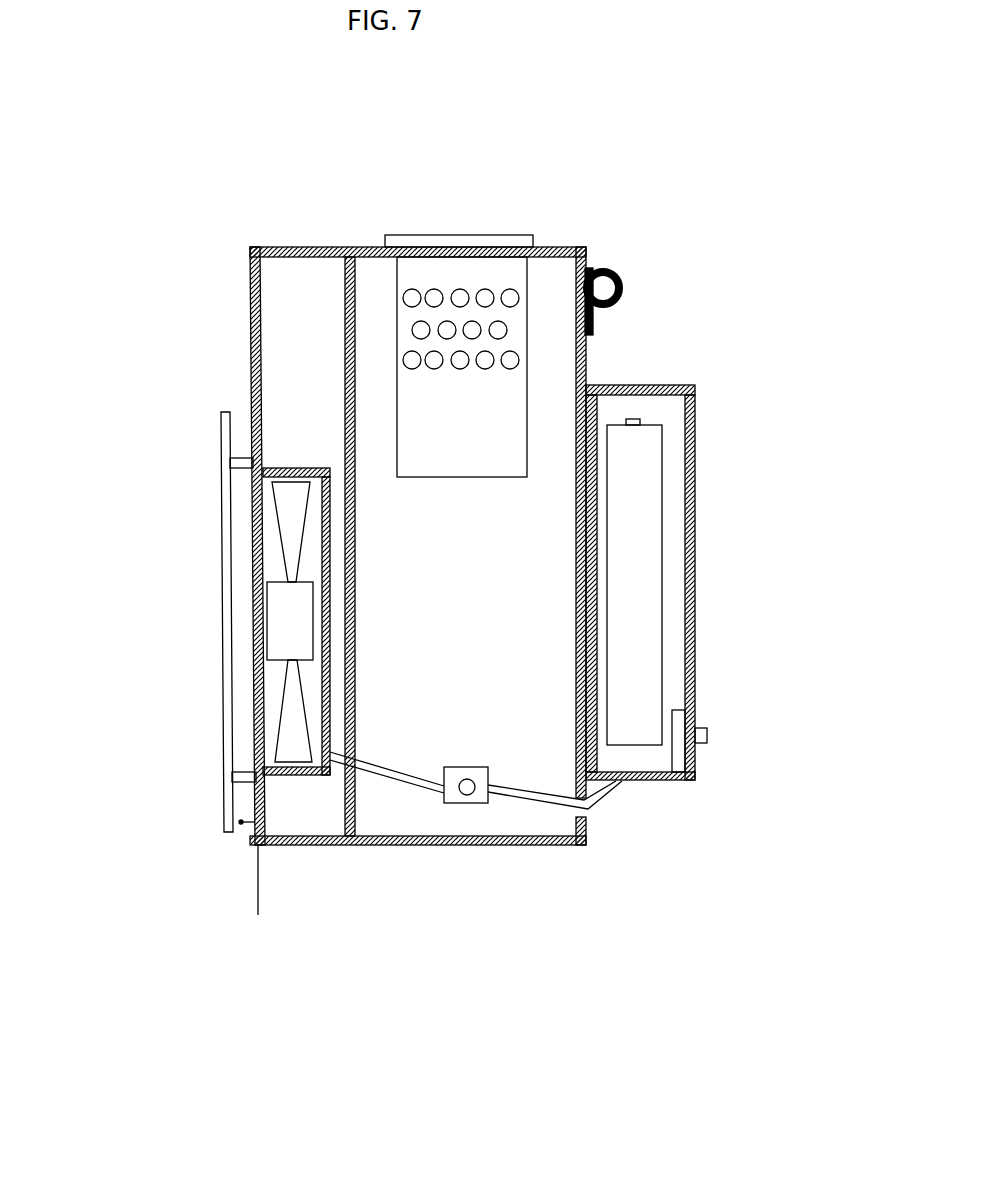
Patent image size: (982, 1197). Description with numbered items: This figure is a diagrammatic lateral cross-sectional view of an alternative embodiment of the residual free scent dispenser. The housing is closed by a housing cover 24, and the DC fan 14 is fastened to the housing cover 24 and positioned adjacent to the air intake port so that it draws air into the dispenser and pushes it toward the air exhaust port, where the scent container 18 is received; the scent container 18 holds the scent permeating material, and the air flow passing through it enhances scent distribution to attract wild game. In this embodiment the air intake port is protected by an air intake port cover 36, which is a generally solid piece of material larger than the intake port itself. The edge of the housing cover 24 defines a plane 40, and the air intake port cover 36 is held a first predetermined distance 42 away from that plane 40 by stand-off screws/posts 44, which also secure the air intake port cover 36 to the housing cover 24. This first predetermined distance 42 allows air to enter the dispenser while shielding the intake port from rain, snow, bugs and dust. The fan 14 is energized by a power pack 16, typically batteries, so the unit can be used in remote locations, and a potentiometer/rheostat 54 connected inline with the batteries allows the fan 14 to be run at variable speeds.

The DC fan 14 is at (275, 638).
The power pack 16 is at (727, 496).
The scent container 18 is at (420, 235).
The housing cover 24 is at (290, 317).
The air intake port cover 36 is at (222, 617).
The plane 40 is at (258, 900).
The first predetermined distance 42 is at (247, 825).
The stand-off screws/posts 44 is at (237, 460).
The potentiometer/rheostat 54 is at (463, 803).